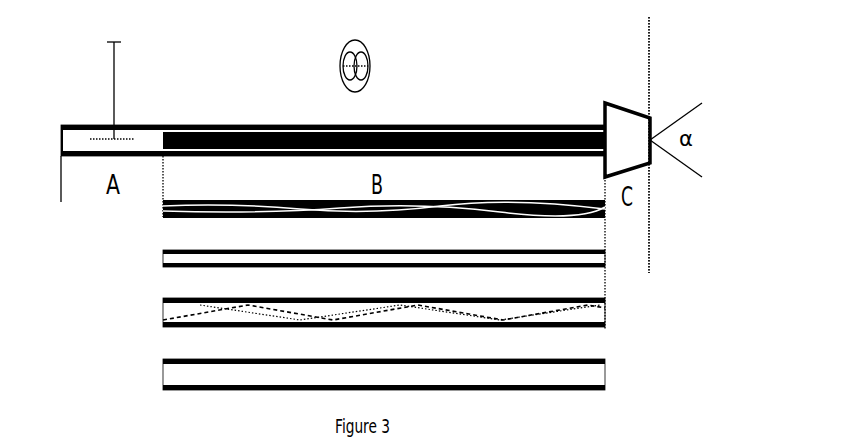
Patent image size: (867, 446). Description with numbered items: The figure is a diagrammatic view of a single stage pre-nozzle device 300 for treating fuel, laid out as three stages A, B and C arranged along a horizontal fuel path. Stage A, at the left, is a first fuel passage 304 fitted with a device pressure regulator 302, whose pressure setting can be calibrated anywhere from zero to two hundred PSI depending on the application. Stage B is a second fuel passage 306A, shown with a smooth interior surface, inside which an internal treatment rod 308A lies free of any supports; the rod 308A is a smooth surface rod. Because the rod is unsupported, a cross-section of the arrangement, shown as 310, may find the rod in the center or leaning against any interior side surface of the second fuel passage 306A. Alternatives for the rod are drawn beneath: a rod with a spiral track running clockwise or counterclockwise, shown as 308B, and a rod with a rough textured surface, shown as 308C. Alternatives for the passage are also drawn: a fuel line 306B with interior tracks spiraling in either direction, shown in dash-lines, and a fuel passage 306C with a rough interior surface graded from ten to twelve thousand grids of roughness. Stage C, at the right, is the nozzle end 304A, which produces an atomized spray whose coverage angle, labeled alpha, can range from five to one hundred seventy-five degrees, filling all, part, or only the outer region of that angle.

The single stage pre-nozzle device 300 is at (672, 55).
The device pressure regulator 302 is at (105, 103).
The first fuel passage 304 is at (75, 127).
The tapered nozzle end of cladding 304A is at (620, 103).
The second fuel passage 306A is at (252, 126).
The fuel line 306B is at (606, 312).
The fuel passage 306C is at (606, 373).
The internal treatment rod 308A is at (297, 135).
The rod with spiral track 308B is at (606, 208).
The rod with rough textured surface 308C is at (606, 265).
The cross-sectional view 310 is at (369, 55).